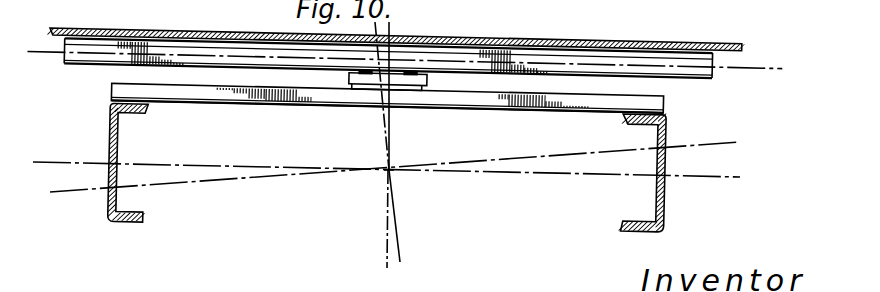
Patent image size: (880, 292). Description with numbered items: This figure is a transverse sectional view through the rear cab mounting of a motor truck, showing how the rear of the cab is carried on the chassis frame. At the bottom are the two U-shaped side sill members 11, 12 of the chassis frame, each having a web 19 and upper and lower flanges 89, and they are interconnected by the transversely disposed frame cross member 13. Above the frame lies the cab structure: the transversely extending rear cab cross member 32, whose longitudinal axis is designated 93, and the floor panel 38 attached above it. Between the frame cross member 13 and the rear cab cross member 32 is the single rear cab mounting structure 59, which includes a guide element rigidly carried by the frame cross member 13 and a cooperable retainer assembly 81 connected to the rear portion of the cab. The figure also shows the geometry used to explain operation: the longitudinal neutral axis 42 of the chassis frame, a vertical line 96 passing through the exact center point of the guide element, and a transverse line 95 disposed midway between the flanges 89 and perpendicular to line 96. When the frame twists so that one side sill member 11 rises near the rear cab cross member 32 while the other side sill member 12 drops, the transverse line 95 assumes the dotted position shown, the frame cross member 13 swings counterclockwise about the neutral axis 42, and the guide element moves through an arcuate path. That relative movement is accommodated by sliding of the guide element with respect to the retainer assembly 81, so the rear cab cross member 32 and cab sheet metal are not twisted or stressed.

The side sill member 11 is at (668, 204).
The side sill member 12 is at (112, 115).
The frame cross member 13 is at (668, 108).
The web 19 is at (113, 133).
The rear cab cross member 32 is at (538, 60).
The floor panel 38 is at (217, 33).
The neutral axis 42 is at (389, 170).
The rear cab mounting structure 59 is at (368, 92).
The retainer assembly 81 is at (433, 78).
The flanges 89 is at (704, 4).
The longitudinal axis of rear cab cross member 93 is at (760, 66).
The transverse line 95 is at (135, 162).
The vertical line 96 is at (395, 210).